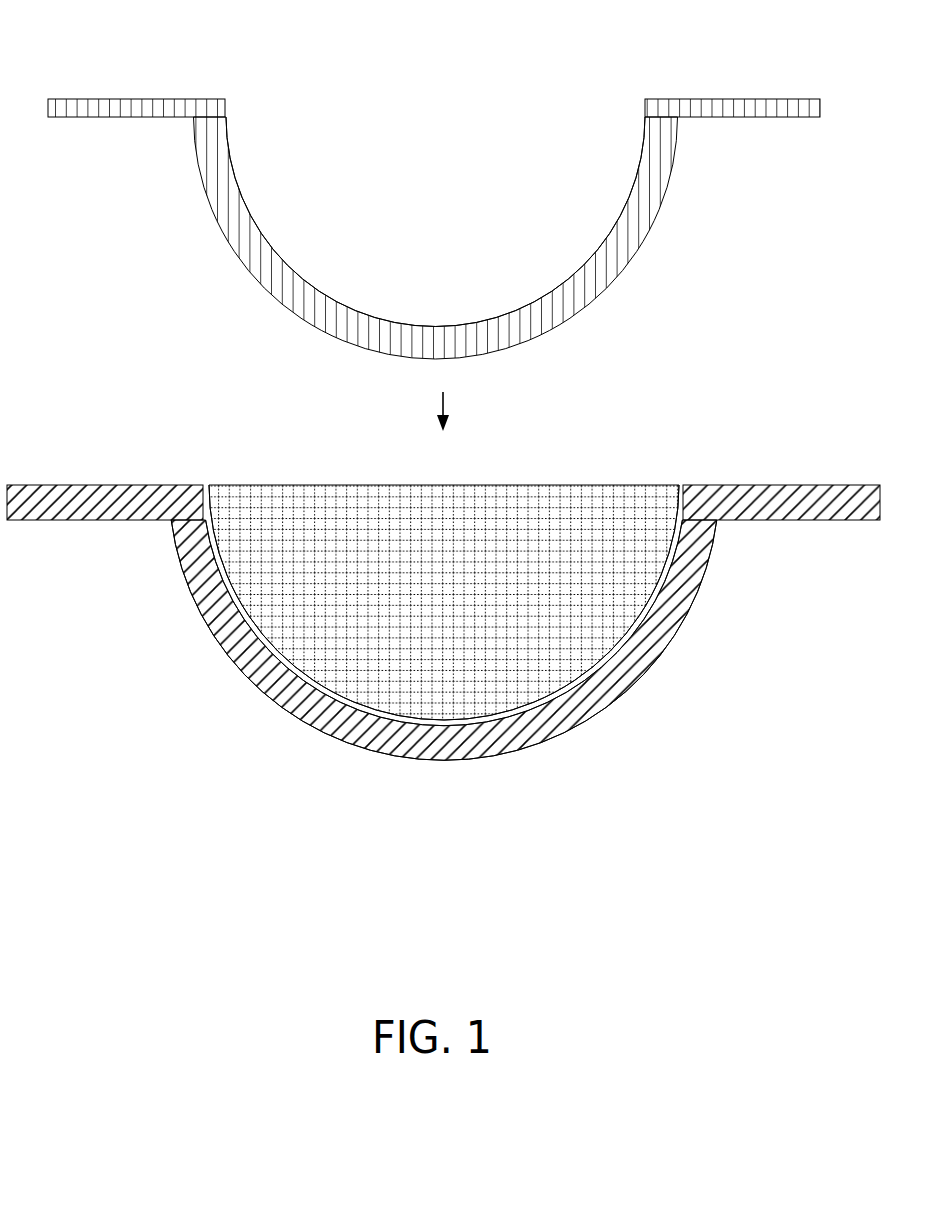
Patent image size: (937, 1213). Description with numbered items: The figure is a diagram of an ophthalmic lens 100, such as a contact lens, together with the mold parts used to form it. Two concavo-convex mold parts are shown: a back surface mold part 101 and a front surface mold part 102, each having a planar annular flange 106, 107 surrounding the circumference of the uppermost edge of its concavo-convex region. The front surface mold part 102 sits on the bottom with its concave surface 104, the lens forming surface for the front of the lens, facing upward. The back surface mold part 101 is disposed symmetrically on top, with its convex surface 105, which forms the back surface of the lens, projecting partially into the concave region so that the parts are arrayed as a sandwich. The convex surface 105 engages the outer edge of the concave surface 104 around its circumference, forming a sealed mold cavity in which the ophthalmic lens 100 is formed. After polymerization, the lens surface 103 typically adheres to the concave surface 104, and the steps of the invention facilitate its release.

The ophthalmic lens 100 is at (223, 570).
The back surface mold part 101 is at (632, 208).
The front surface mold part 102 is at (293, 702).
The lens surface 103 is at (425, 724).
The concave surface 104 is at (530, 714).
The convex surface 105 is at (208, 201).
The planar annular flange 106 is at (124, 485).
The planar annular flange 107 is at (140, 99).